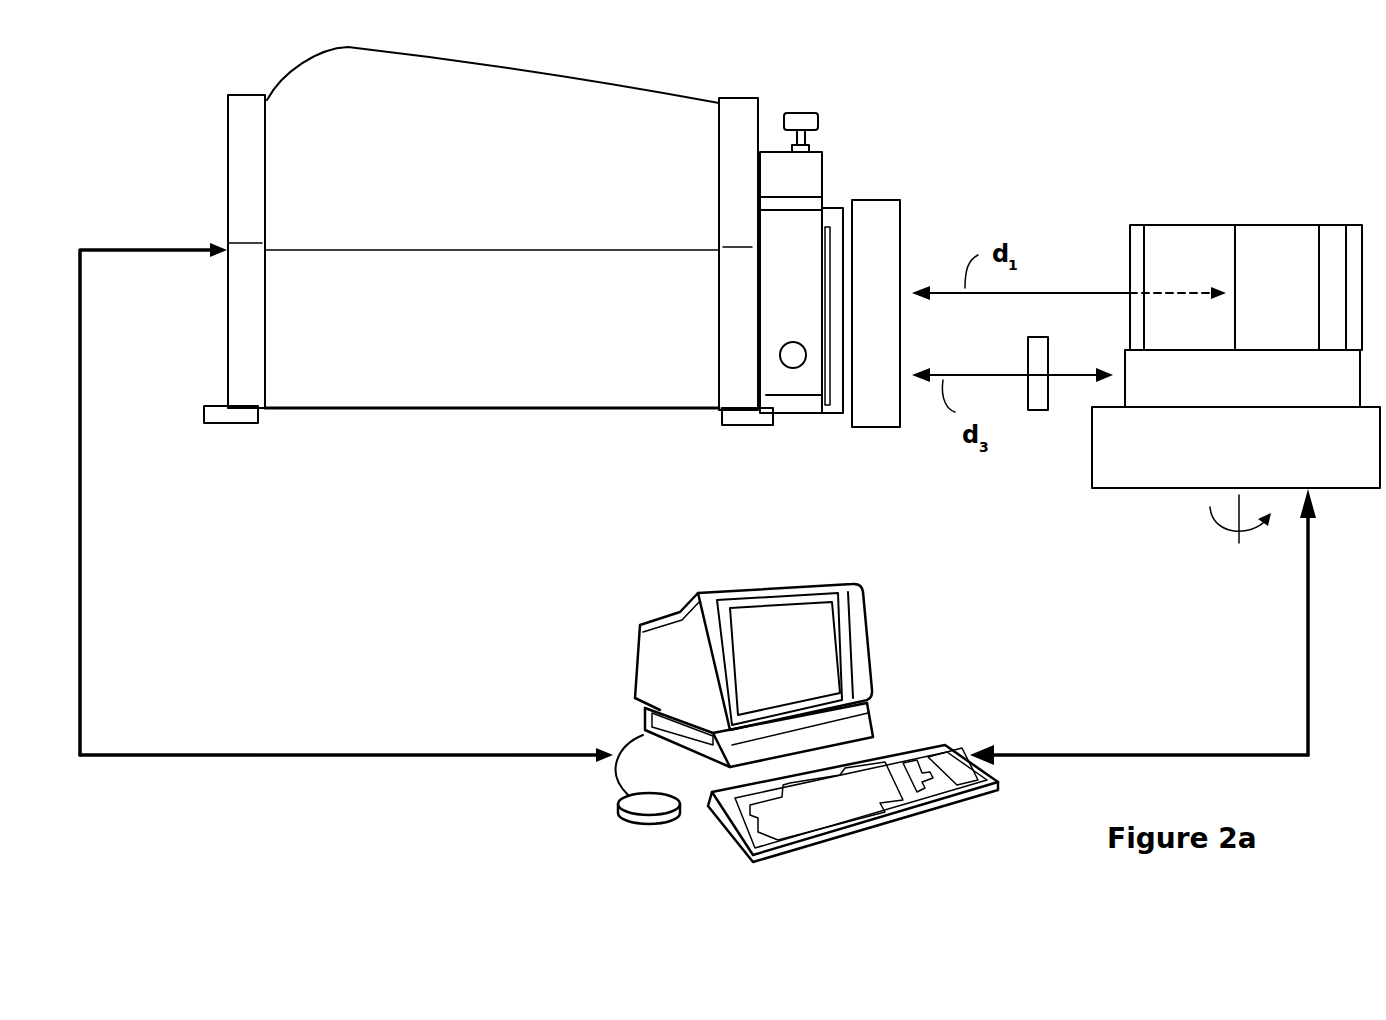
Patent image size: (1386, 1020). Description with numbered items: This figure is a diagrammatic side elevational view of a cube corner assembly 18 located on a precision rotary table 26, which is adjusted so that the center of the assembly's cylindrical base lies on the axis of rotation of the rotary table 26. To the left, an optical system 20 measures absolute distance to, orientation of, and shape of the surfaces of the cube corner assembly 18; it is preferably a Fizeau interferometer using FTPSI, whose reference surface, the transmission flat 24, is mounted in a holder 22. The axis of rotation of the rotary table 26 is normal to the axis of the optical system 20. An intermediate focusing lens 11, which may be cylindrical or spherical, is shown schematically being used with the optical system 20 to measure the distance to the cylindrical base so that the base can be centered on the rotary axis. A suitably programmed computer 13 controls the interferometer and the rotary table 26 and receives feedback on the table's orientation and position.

The optical system 20 is at (448, 383).
The holder 22 is at (813, 177).
The transmission flat 24 is at (885, 212).
The cube corner assembly 18 is at (1215, 208).
The intermediate focusing lens 11 is at (1030, 347).
The precision rotary table 26 is at (1115, 443).
The computer 13 is at (870, 637).